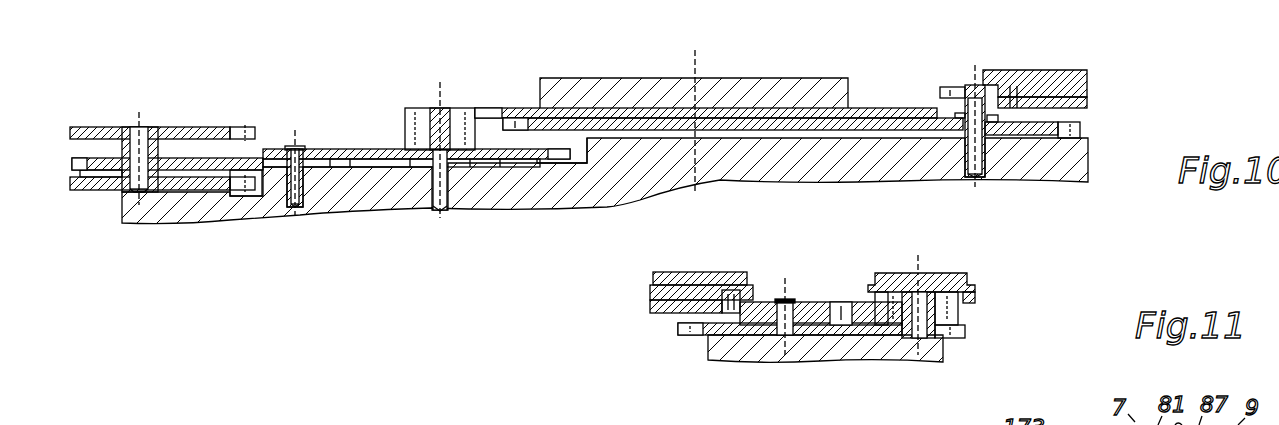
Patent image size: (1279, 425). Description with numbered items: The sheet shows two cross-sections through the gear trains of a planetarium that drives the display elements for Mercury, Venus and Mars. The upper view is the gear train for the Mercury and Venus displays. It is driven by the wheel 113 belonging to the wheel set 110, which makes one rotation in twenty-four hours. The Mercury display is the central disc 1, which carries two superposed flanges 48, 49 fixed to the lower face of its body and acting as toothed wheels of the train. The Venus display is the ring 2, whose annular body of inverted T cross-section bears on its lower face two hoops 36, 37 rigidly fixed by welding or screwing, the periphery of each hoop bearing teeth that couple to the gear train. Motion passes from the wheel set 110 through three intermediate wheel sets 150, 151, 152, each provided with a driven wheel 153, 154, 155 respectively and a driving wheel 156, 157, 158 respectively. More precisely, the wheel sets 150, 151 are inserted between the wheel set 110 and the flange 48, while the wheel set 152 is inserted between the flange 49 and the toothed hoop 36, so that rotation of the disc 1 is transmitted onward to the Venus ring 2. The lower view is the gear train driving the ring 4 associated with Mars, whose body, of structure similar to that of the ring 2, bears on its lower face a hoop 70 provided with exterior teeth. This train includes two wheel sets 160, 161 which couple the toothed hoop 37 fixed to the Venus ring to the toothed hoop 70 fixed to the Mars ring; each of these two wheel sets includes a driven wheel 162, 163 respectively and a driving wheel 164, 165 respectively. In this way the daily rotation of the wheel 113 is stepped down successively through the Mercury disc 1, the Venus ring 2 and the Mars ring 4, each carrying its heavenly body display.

In FIG. 10, the central disc 1 is at (703, 75).
In FIG. 10, the ring 2 is at (1078, 78).
In FIG. 11, the ring 2 is at (664, 280).
In FIG. 11, the ring 4 is at (985, 280).
In FIG. 10, the hoop 36 is at (1087, 92).
In FIG. 11, the hoop 36 is at (652, 298).
In FIG. 10, the hoop 37 is at (1087, 104).
In FIG. 11, the hoop 37 is at (650, 308).
In FIG. 10, the flange 48 is at (497, 108).
In FIG. 10, the flange 49 is at (583, 152).
In FIG. 11, the hoop 70 is at (975, 298).
In FIG. 10, the wheel set 110 is at (150, 122).
In FIG. 10, the wheel 113 is at (90, 156).
In FIG. 10, the intermediate wheel set 150 is at (308, 142).
In FIG. 10, the intermediate wheel set 151 is at (448, 100).
In FIG. 10, the intermediate wheel set 152 is at (962, 88).
In FIG. 10, the driven wheel 153 is at (336, 168).
In FIG. 10, the driven wheel 154 is at (510, 160).
In FIG. 10, the driven wheel 155 is at (1082, 128).
In FIG. 10, the driving wheel 156 is at (282, 149).
In FIG. 10, the driving wheel 157 is at (408, 108).
In FIG. 10, the driving wheel 158 is at (940, 92).
In FIG. 11, the wheel set 160 is at (792, 295).
In FIG. 11, the wheel set 161 is at (914, 342).
In FIG. 11, the driven wheel 162 is at (838, 302).
In FIG. 11, the driven wheel 163 is at (962, 338).
In FIG. 11, the driving wheel 164 is at (692, 336).
In FIG. 11, the driving wheel 165 is at (958, 312).